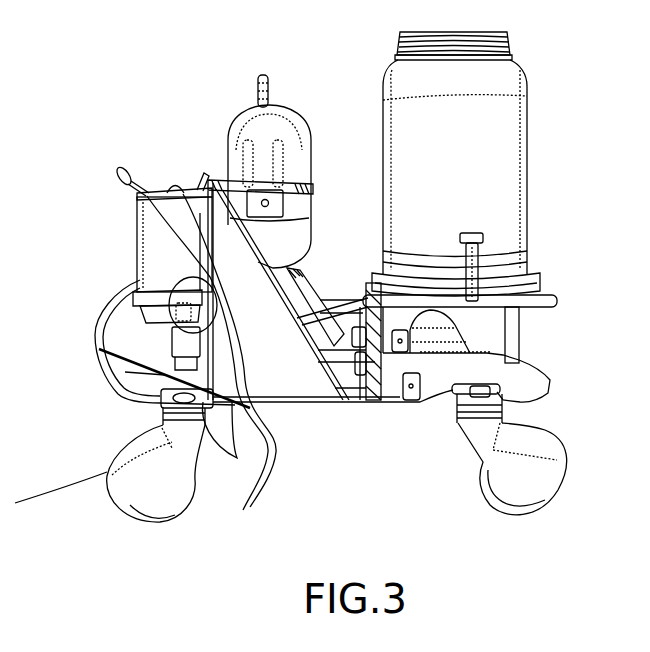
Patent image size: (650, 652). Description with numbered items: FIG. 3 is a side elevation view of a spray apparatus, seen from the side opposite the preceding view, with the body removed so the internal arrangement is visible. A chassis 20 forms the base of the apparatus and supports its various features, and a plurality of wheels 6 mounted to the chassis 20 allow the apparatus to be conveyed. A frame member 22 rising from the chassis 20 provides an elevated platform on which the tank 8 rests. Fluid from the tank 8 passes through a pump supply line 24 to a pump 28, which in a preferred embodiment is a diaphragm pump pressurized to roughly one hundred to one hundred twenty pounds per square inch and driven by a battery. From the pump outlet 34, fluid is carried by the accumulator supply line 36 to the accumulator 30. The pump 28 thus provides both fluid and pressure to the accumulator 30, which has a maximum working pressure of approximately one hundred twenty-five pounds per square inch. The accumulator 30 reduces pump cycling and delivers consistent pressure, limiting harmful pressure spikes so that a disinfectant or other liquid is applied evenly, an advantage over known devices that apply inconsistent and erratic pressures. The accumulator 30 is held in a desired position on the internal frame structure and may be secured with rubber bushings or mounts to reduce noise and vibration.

The wheels 6 is at (162, 498).
The tank 8 is at (505, 161).
The chassis 20 is at (547, 377).
The frame member 22 is at (557, 300).
The pump supply line 24 is at (330, 303).
The pump 28 is at (156, 250).
The accumulator 30 is at (243, 130).
The pump outlet 34 is at (155, 340).
The accumulator supply line 36 is at (135, 331).